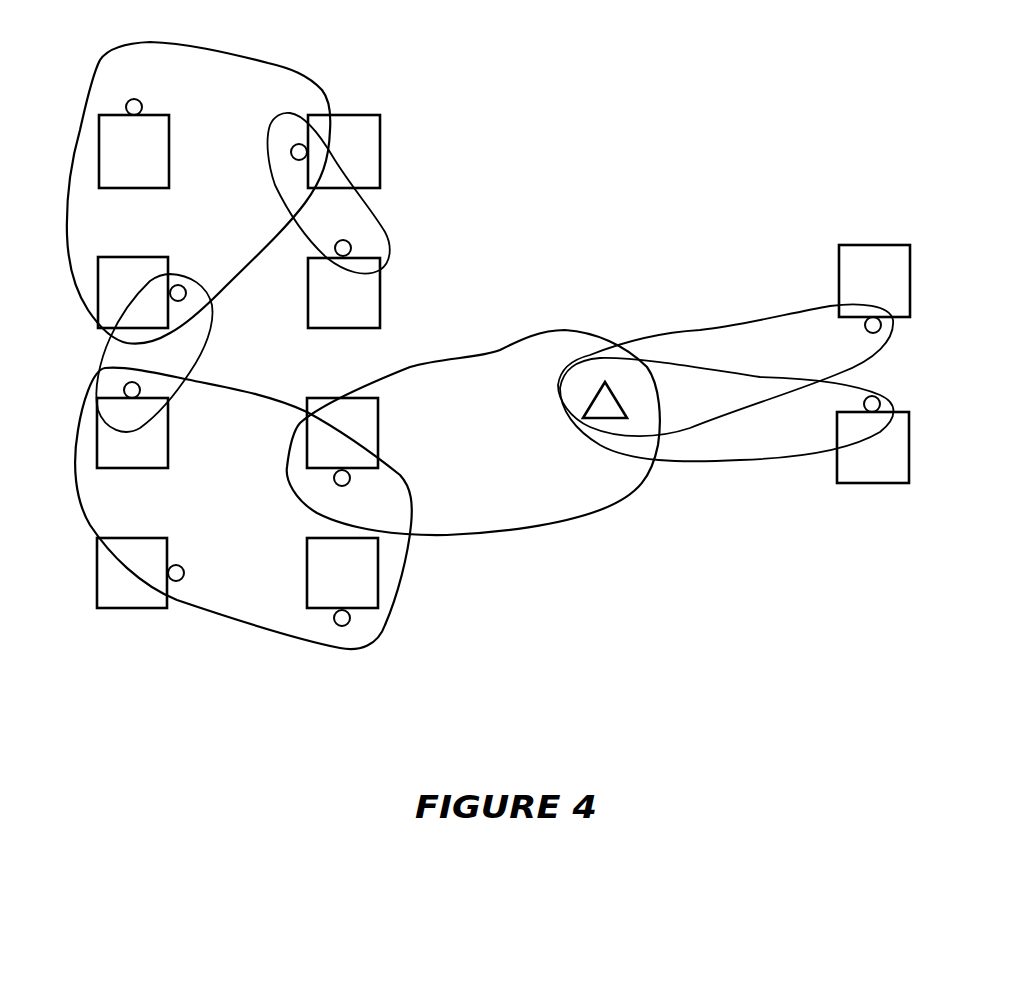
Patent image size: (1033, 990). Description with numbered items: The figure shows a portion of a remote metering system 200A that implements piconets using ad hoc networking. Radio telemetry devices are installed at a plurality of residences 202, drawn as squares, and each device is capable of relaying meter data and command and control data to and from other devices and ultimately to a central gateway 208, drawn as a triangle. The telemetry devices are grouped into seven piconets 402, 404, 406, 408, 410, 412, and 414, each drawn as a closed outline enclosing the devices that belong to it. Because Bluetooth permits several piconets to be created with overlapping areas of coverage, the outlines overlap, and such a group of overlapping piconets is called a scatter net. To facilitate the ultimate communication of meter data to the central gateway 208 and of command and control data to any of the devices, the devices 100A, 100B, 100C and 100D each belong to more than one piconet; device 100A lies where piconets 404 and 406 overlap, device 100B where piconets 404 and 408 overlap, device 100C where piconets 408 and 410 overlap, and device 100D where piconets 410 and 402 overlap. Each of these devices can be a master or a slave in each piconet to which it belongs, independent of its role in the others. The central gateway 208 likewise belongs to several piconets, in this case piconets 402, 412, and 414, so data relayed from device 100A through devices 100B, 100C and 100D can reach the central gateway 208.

The remote metering system portion 200A is at (574, 188).
The residence 202 is at (380, 135).
The central gateway 208 is at (618, 406).
The radio telemetry device 100A is at (291, 146).
The radio telemetry device 100B is at (173, 283).
The radio telemetry device 100C is at (131, 381).
The radio telemetry device 100D is at (352, 480).
The piconet 402 is at (597, 330).
The piconet 404 is at (290, 66).
The piconet 406 is at (385, 230).
The piconet 408 is at (192, 365).
The piconet 410 is at (80, 502).
The piconet 412 is at (757, 458).
The piconet 414 is at (752, 322).